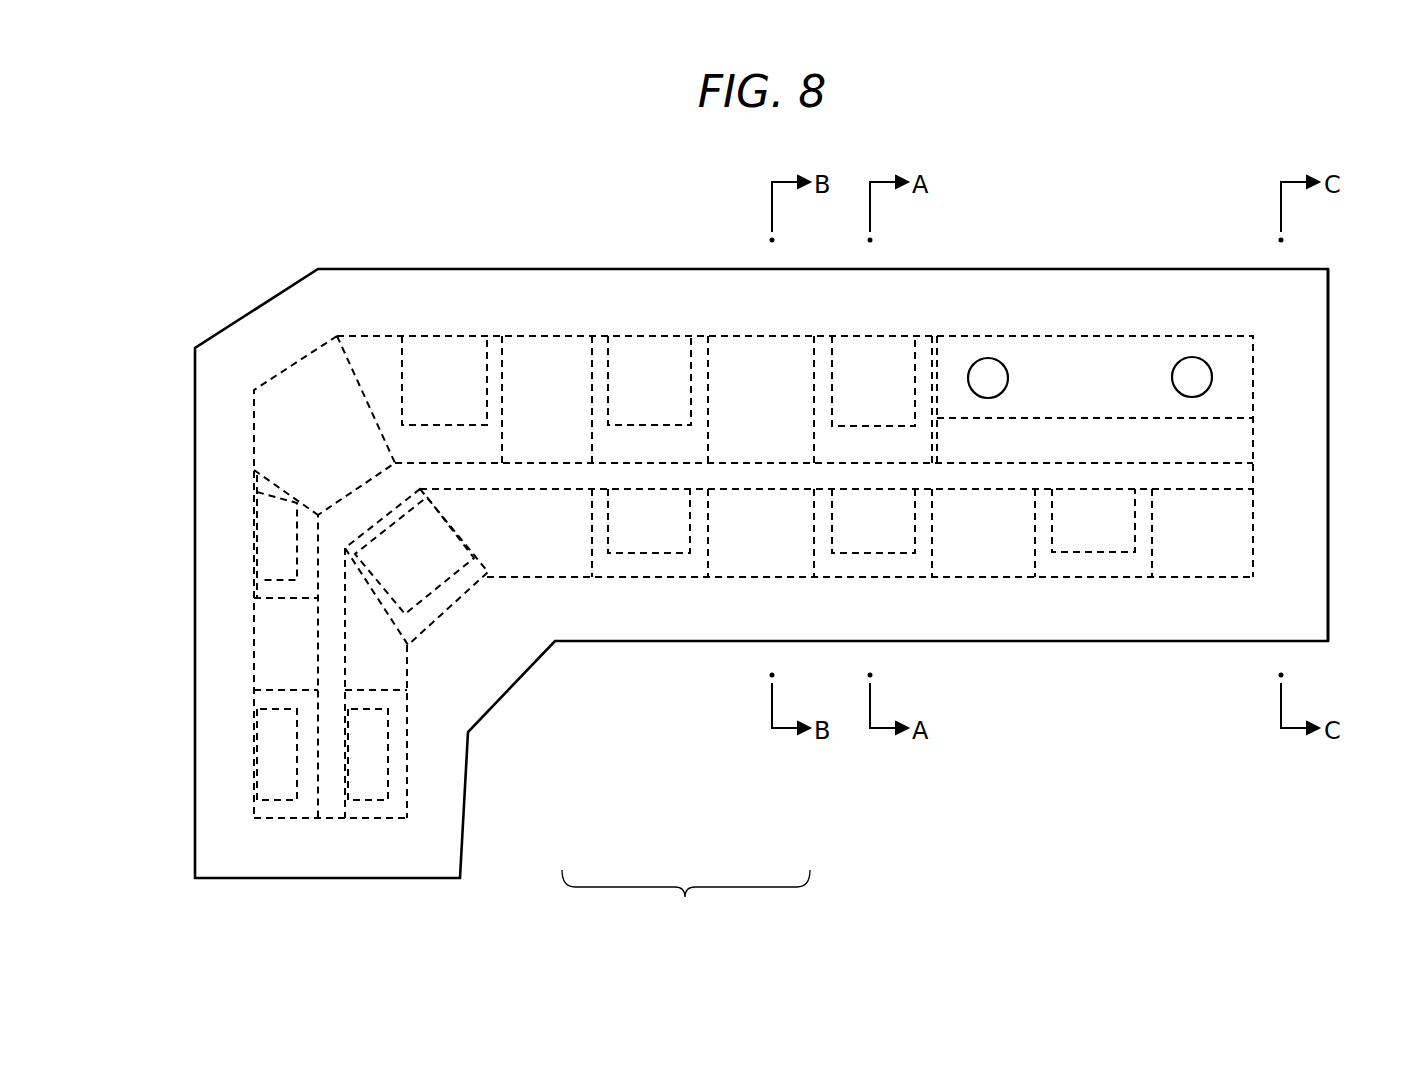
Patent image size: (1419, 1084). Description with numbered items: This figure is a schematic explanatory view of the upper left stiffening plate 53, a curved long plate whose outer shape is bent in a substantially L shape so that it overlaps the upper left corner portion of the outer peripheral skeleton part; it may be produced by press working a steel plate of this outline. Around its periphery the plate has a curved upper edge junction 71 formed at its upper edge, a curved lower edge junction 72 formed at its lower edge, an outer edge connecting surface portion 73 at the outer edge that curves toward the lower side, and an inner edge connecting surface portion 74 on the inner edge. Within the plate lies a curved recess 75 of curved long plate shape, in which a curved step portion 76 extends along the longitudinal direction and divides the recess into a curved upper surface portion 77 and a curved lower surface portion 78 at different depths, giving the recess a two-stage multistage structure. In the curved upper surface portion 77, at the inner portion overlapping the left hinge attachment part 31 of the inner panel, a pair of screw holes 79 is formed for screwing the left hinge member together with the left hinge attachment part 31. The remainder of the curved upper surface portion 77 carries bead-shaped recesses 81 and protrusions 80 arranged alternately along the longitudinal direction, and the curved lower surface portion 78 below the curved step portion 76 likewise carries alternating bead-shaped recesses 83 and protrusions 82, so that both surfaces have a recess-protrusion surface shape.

The left hinge attachment part 31 is at (1090, 385).
The upper left stiffening plate 53 is at (208, 246).
The curved upper edge junction 71 is at (413, 312).
The curved lower edge junction 72 is at (1002, 613).
The outer edge connecting surface portion 73 is at (347, 848).
The inner edge connecting surface portion 74 is at (1298, 453).
The curved recess 75 is at (686, 901).
The curved step portion 76 is at (627, 472).
The curved upper surface portion 77 is at (527, 432).
The curved lower surface portion 78 is at (727, 540).
The screw holes 79 is at (990, 378).
The protrusions 80 is at (455, 363).
The recesses 81 is at (290, 405).
The protrusions 82 is at (403, 585).
The recesses 83 is at (380, 677).